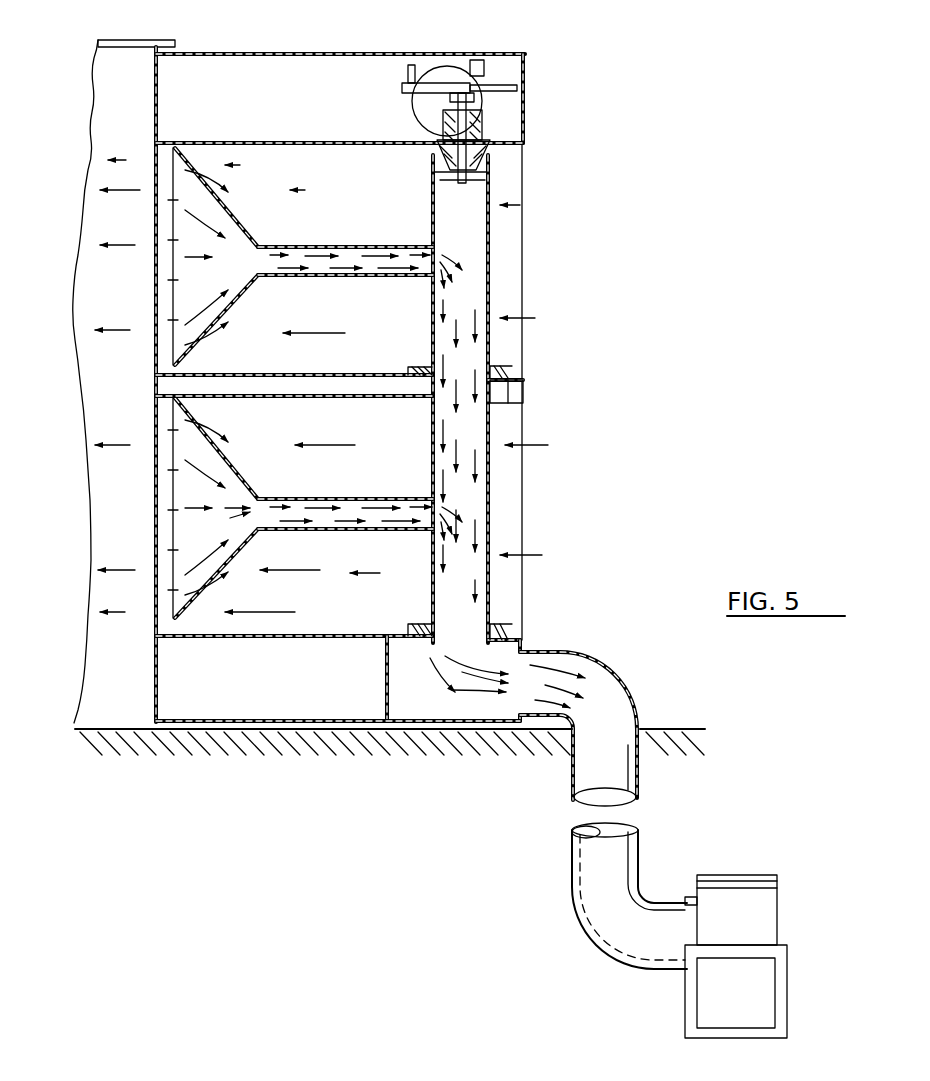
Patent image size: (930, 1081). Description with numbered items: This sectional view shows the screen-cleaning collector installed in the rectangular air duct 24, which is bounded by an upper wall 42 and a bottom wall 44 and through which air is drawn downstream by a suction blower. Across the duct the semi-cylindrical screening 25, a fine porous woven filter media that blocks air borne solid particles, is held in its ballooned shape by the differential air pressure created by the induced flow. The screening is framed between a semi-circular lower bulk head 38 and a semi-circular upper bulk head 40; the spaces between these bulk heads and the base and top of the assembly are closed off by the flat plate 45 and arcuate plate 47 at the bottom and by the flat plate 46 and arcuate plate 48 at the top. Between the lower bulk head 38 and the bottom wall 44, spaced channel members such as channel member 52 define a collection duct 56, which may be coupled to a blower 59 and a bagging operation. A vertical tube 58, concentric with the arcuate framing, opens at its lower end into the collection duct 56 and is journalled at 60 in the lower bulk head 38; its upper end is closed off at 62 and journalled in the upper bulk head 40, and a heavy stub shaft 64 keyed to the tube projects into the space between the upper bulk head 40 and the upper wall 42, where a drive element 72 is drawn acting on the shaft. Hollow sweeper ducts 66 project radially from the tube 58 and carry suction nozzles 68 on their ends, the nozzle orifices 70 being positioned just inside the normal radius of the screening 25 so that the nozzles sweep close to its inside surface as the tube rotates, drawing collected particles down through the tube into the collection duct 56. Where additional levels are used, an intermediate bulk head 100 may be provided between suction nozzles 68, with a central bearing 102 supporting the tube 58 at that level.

The air duct 24 is at (150, 32).
The screening 25 is at (152, 528).
The lower bulk head 38 is at (296, 640).
The upper bulk head 40 is at (290, 143).
The upper wall 42 is at (385, 48).
The bottom wall 44 is at (352, 716).
The flat plate 45 is at (528, 640).
The flat plate 46 is at (152, 665).
The arcuate plate 47 is at (525, 106).
The arcuate plate 48 is at (156, 78).
The channel member 52 is at (262, 700).
The collection duct 56 is at (408, 700).
The vertical tube 58 is at (490, 499).
The blower 59 is at (770, 907).
The journal 60 is at (498, 626).
The closed upper end 62 is at (490, 185).
The stub shaft 64 is at (482, 136).
The sweeper duct 66 is at (350, 247).
The suction nozzle 68 is at (228, 216).
The nozzle orifice 70 is at (160, 282).
The fan 72 is at (510, 82).
The bulk head 100 is at (367, 392).
The central bearing 102 is at (500, 372).